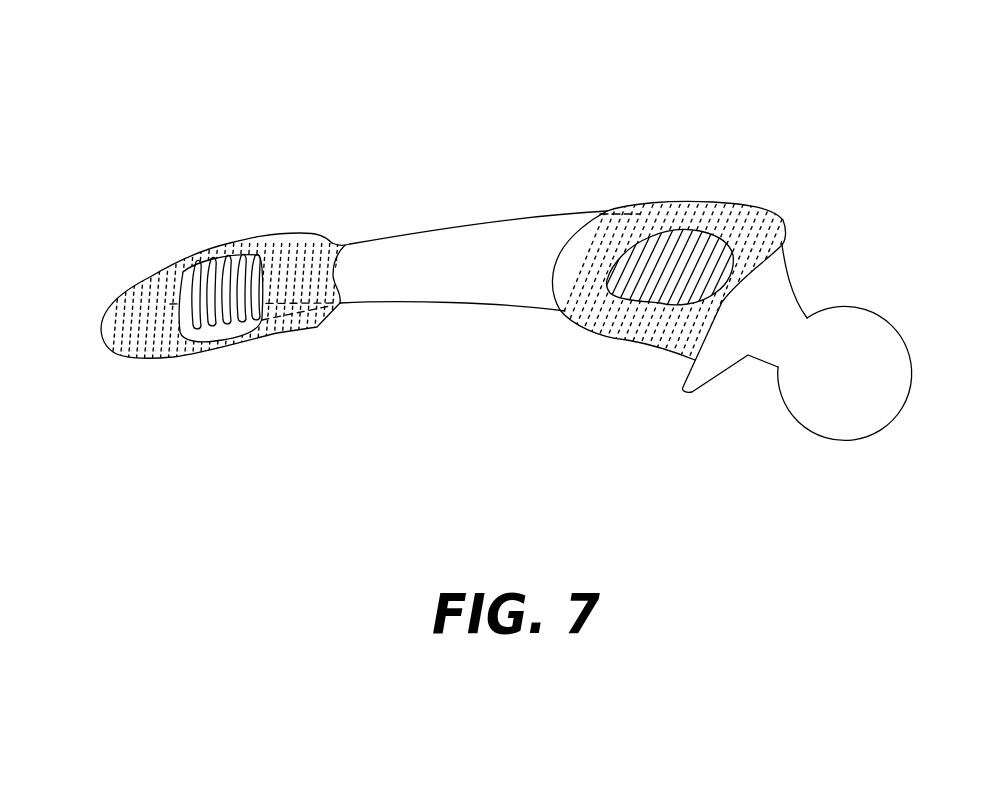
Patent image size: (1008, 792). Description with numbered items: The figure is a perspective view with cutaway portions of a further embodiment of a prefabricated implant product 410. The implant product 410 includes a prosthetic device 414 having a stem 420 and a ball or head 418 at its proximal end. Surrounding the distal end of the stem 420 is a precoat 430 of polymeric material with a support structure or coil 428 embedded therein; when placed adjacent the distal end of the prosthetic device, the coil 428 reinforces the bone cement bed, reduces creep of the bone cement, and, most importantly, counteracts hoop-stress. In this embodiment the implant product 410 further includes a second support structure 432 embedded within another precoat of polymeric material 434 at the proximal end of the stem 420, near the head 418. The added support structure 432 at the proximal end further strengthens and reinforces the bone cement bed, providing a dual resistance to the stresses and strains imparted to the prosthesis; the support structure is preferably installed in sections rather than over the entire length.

The prefabricated implant product 410 is at (530, 160).
The prosthetic device 414 is at (445, 293).
The ball or head 418 is at (818, 415).
The stem 420 is at (443, 240).
The support structure or coil 428 is at (240, 260).
The precoat of polymeric material 430 is at (123, 302).
The support structure 432 is at (747, 217).
The precoat of polymeric material 434 is at (602, 225).